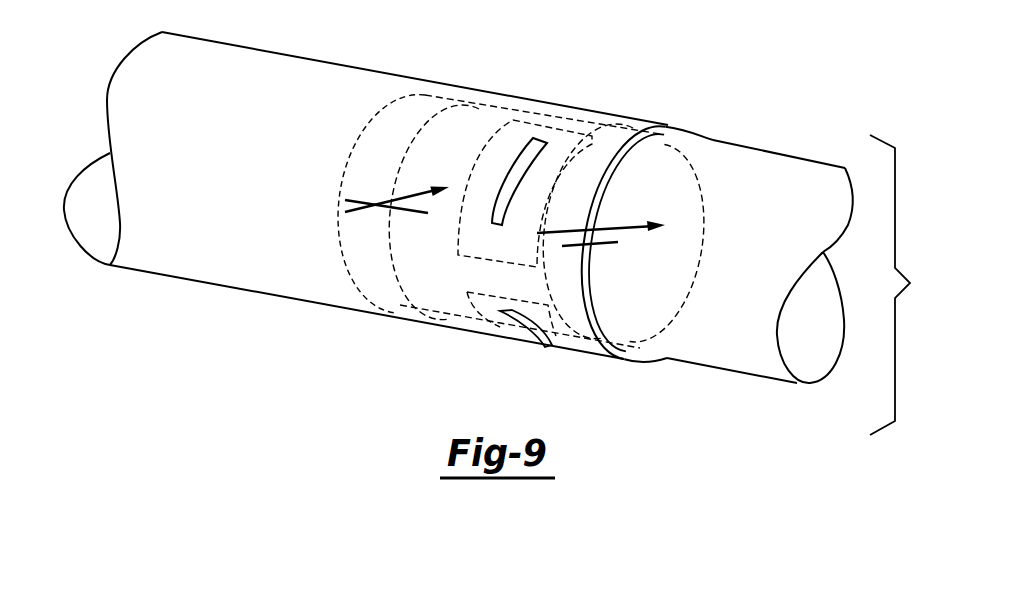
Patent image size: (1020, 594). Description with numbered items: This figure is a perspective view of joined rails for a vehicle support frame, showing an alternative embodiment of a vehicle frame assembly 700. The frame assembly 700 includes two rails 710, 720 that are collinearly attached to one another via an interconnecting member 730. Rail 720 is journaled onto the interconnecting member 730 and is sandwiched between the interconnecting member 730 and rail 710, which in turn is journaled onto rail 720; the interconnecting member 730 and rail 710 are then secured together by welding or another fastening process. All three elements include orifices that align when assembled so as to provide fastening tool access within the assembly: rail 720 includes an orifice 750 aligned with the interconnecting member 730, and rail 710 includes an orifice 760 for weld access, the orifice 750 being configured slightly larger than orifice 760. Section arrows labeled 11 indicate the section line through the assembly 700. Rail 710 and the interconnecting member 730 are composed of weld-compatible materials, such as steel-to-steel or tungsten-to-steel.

The vehicle frame assembly 700 is at (907, 285).
The rail 710 is at (275, 65).
The rail 720 is at (753, 163).
The interconnecting member 730 is at (448, 100).
The orifice 750 is at (602, 140).
The orifice 760 is at (512, 185).
The section line 11- 11 is at (484, 233).